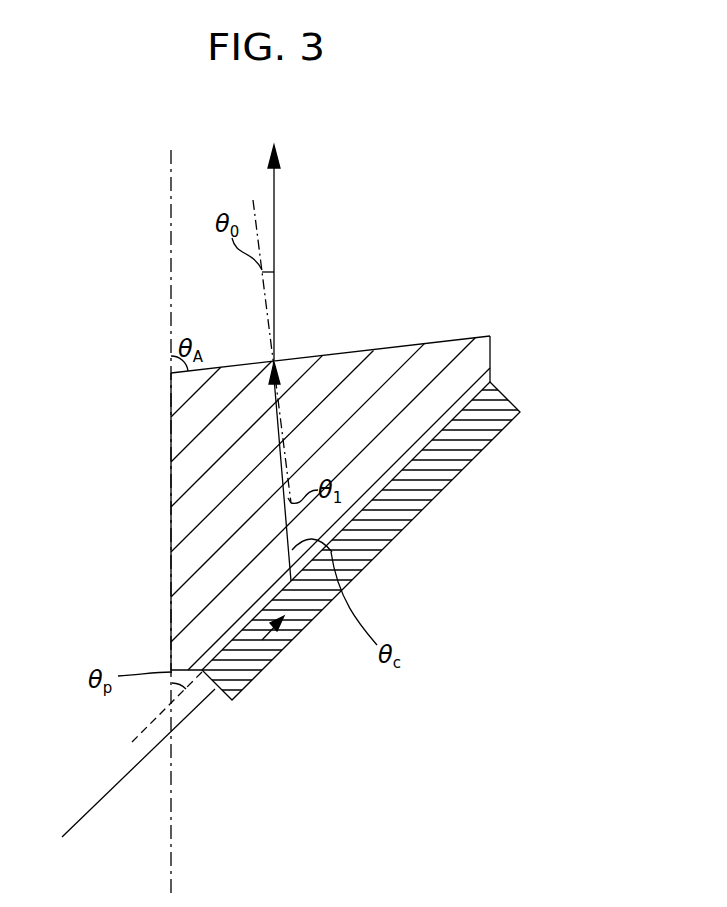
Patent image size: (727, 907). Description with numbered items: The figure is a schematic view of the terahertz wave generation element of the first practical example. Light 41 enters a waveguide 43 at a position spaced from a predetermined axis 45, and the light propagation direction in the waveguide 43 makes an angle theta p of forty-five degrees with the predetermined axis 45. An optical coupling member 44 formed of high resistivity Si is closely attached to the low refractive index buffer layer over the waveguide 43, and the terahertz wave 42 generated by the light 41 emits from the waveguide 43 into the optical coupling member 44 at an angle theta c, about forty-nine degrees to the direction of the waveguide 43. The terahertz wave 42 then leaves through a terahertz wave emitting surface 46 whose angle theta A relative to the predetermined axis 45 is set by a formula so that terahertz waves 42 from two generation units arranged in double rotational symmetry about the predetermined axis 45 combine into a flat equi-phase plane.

The light 41 is at (100, 796).
The terahertz wave 42 is at (274, 183).
The waveguide 43 is at (519, 405).
The optical coupling member 44 is at (413, 372).
The predetermined axis 45 is at (171, 222).
The terahertz wave emitting surface 46 is at (347, 352).